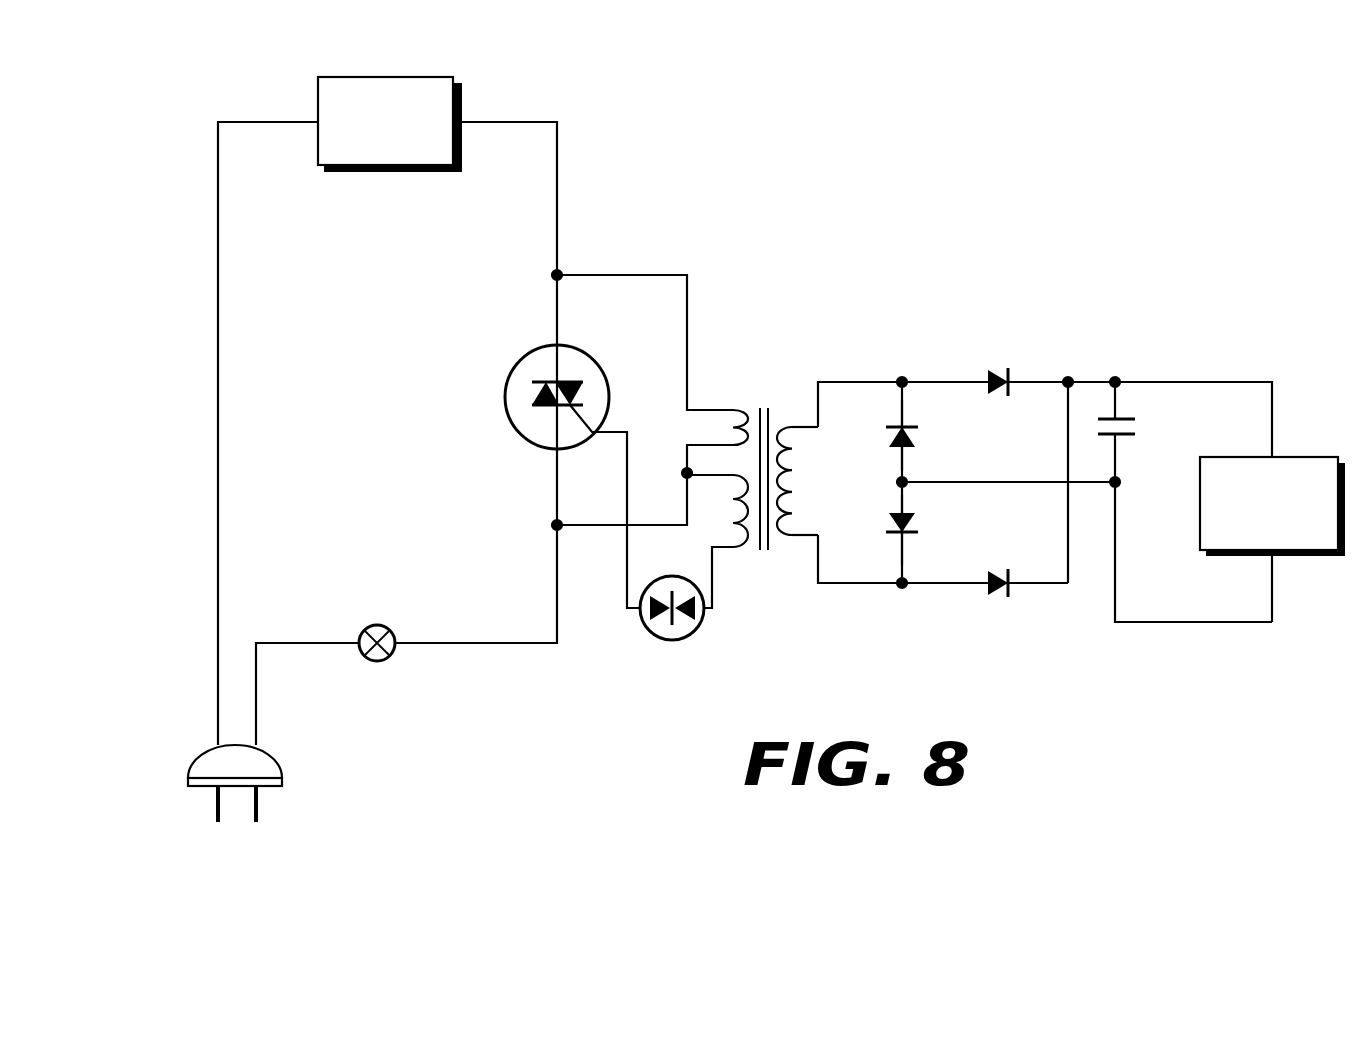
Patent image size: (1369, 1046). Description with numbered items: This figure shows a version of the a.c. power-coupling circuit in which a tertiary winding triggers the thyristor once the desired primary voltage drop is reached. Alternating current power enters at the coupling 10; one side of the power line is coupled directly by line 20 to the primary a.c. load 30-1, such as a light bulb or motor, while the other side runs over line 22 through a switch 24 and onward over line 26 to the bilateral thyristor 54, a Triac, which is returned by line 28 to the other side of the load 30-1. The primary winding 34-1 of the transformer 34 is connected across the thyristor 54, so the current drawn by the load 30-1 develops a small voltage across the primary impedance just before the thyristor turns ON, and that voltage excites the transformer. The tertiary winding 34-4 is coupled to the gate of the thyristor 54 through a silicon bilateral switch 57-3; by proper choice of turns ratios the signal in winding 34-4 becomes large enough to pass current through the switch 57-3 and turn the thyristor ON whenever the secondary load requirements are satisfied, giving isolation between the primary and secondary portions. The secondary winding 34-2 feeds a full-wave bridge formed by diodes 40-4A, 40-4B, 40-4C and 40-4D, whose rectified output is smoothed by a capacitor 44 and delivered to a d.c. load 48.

The a.c. power coupling 10 is at (206, 753).
The line 20 is at (216, 398).
The line 22 is at (294, 641).
The switch 24 is at (381, 624).
The conductor 26 is at (477, 641).
The line 28 is at (563, 172).
The primary a.c. load 30-1 is at (463, 98).
The transformer 34 is at (723, 445).
The primary winding 34-1 is at (726, 421).
The secondary winding 34-2 is at (804, 459).
The tertiary winding 34-4 is at (725, 505).
The diode 40-4A is at (1021, 369).
The diode 40-4B is at (1023, 595).
The diode 40-4C is at (925, 446).
The diode 40-4D is at (962, 534).
The capacitor 44 is at (1141, 432).
The D.C. load 48 is at (1319, 455).
The bilateral thyristor 54 is at (526, 349).
The silicon bilateral switch 57-3 is at (696, 633).